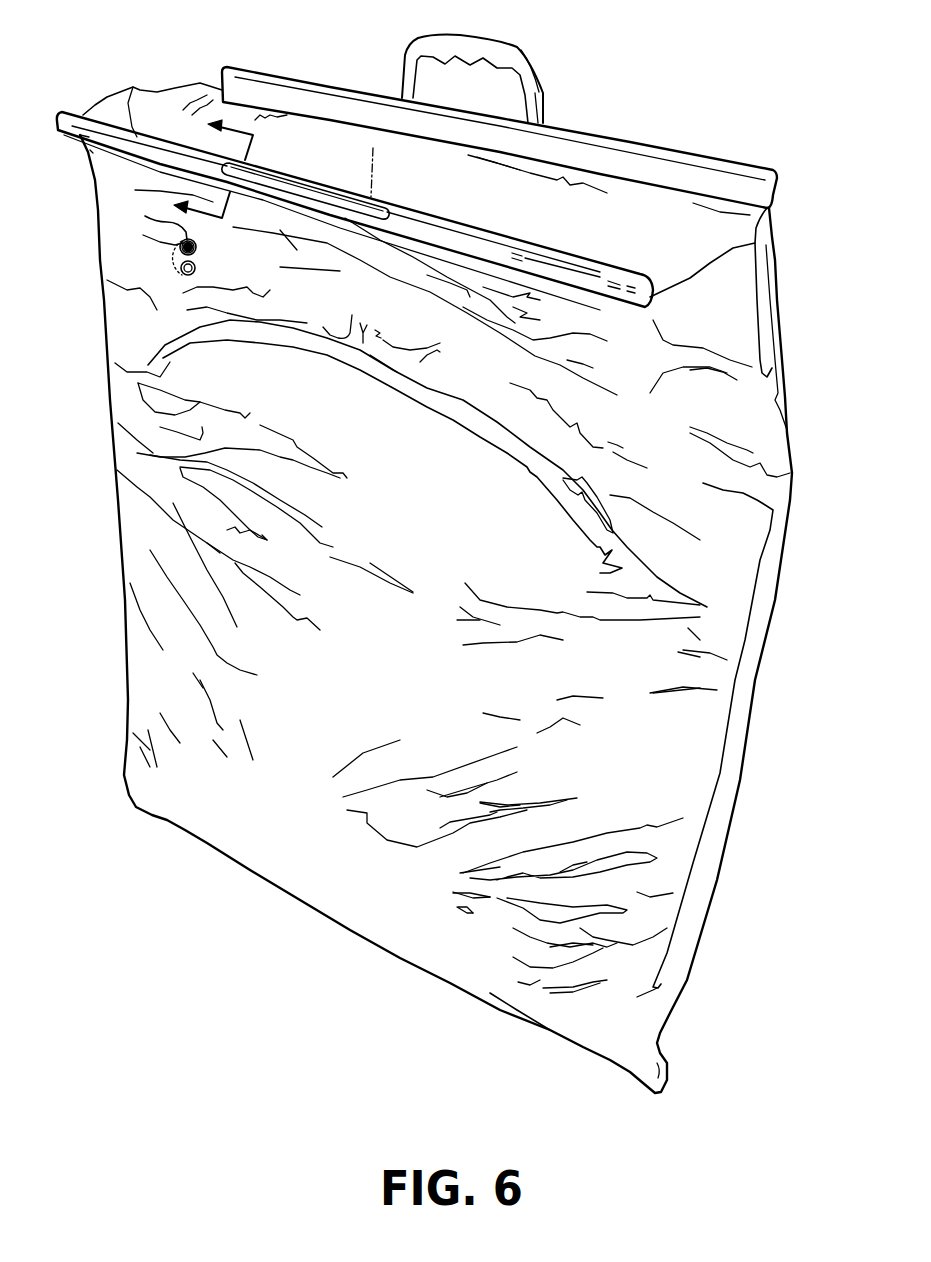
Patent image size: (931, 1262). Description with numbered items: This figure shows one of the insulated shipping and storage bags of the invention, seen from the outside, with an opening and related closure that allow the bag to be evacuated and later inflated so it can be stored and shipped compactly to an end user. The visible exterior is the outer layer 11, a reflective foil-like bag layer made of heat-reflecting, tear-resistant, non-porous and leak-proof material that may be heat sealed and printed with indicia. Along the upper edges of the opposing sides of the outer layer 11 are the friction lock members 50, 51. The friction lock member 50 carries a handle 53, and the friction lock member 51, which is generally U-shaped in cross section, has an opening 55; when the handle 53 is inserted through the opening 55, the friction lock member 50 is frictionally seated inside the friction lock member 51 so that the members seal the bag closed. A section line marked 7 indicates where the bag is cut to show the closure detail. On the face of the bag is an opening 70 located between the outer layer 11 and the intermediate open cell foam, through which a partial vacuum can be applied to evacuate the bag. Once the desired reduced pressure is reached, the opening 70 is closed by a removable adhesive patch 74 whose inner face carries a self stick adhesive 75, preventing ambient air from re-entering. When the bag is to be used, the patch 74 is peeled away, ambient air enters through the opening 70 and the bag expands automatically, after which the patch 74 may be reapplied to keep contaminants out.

The outer layer 11 is at (220, 840).
The friction lock member 50 is at (745, 163).
The friction lock member 51 is at (600, 267).
The handle 53 is at (542, 92).
The opening 55 is at (335, 203).
The section line 7- 7 is at (273, 178).
The opening 70 is at (187, 276).
The removable adhesive patch 74 is at (156, 218).
The self stick adhesive 75 is at (197, 249).